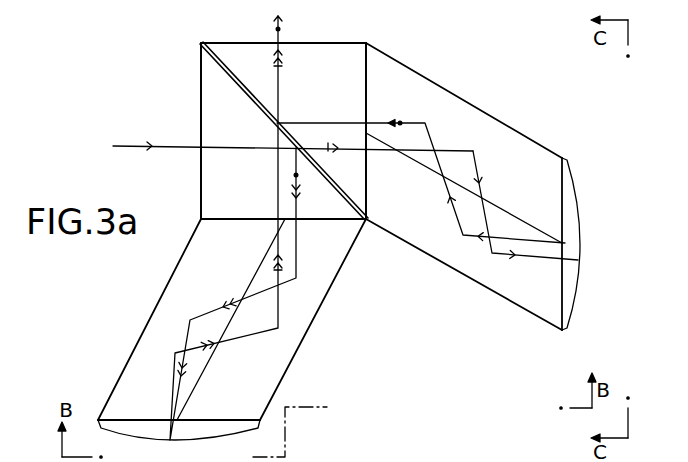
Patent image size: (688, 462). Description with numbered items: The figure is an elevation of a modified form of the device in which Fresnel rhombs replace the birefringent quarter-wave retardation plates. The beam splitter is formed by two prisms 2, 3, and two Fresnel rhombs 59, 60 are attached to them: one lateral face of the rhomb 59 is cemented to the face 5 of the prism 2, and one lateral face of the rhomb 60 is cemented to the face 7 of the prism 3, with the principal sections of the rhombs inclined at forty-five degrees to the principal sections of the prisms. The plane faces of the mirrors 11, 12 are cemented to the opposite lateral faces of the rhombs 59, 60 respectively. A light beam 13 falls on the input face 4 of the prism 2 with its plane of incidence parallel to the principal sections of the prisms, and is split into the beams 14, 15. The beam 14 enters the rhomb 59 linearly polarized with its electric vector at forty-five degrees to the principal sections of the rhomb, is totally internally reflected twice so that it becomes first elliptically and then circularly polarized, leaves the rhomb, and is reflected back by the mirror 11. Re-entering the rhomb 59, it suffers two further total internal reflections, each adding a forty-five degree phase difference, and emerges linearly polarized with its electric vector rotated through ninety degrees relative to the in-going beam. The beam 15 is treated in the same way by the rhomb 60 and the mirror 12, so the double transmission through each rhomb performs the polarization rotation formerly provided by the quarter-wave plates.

The prism 2 is at (201, 82).
The prism 3 is at (323, 43).
The input face 4 is at (201, 113).
The face of prism 5 is at (234, 218).
The face of prism 7 is at (366, 79).
The mirror 11 is at (106, 431).
The mirror 12 is at (566, 329).
The light beam 13 is at (293, 136).
The beam 14 is at (297, 254).
The beam 15 is at (386, 152).
The Fresnel rhomb 59 is at (291, 348).
The Fresnel rhomb 60 is at (471, 277).